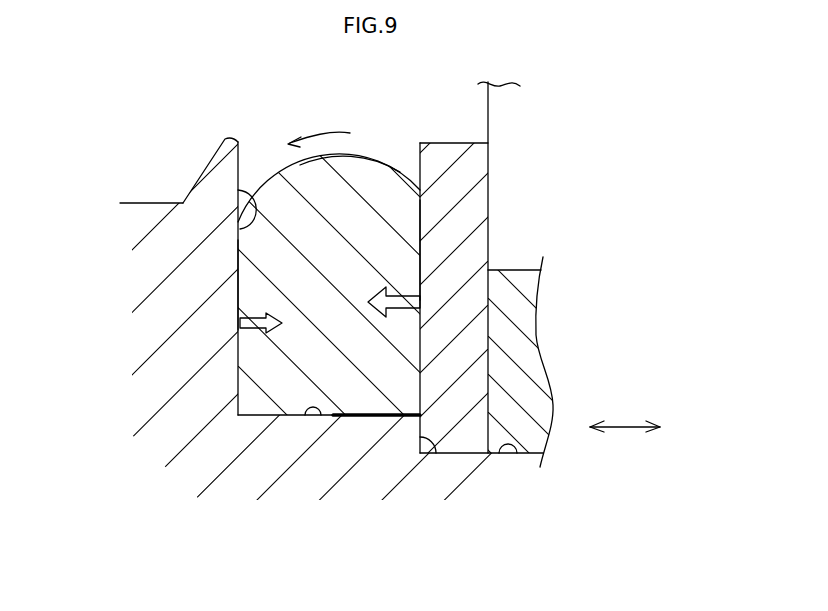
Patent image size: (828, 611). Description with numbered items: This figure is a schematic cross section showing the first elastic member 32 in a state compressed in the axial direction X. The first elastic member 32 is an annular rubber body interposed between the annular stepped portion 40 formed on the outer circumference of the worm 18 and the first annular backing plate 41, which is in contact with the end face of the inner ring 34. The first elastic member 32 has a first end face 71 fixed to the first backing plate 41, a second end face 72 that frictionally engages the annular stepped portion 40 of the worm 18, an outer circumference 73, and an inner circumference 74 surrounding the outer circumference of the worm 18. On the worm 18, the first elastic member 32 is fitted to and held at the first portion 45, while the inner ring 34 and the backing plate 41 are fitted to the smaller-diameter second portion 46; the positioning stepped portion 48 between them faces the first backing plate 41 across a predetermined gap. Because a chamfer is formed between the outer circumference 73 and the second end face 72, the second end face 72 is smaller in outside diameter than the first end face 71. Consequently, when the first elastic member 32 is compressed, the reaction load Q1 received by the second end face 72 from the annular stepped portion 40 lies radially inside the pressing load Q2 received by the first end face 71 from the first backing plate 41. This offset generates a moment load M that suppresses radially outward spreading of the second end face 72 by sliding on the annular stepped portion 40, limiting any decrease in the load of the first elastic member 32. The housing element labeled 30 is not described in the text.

The worm 18 is at (159, 204).
The first elastic member 32 is at (358, 157).
The outer circumference 73 is at (392, 162).
The second end face 72 is at (237, 279).
The annular stepped portion 40 is at (254, 215).
The first portion 45 is at (306, 418).
The inner circumference 74 is at (363, 418).
The first annular backing plate 41 is at (448, 150).
The first end face 71 is at (422, 223).
The positioning stepped portion 48 is at (438, 454).
The housing 30 is at (535, 323).
The inner ring 34 is at (534, 364).
The second portion 46 is at (513, 454).
The moment load M is at (317, 133).
The reaction load Q1 is at (249, 330).
The pressing load Q2 is at (402, 296).
The axial direction X is at (628, 425).